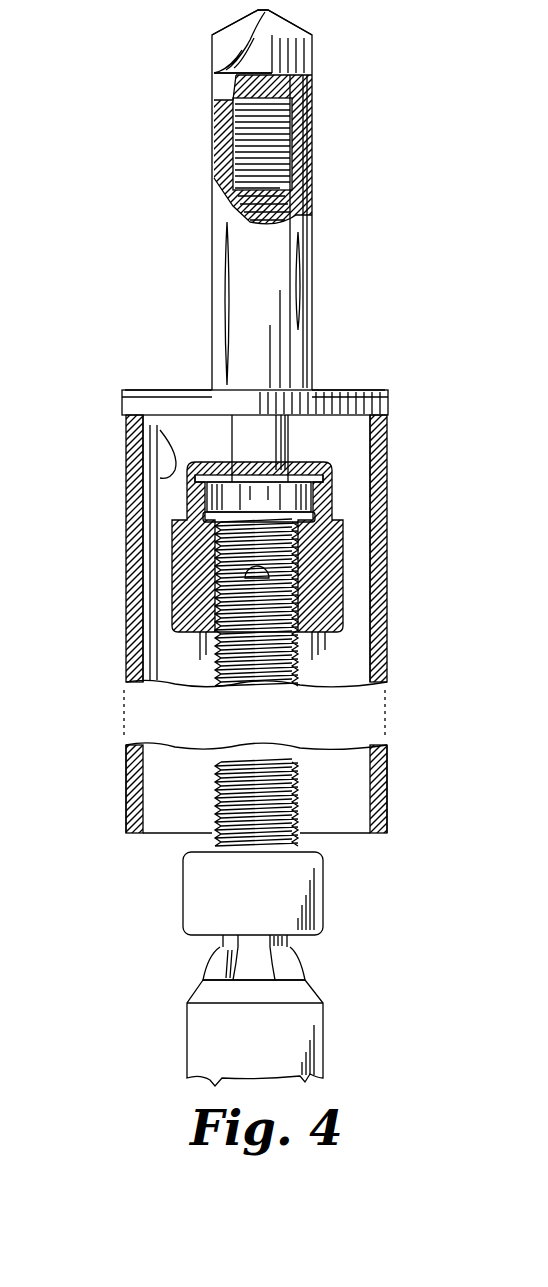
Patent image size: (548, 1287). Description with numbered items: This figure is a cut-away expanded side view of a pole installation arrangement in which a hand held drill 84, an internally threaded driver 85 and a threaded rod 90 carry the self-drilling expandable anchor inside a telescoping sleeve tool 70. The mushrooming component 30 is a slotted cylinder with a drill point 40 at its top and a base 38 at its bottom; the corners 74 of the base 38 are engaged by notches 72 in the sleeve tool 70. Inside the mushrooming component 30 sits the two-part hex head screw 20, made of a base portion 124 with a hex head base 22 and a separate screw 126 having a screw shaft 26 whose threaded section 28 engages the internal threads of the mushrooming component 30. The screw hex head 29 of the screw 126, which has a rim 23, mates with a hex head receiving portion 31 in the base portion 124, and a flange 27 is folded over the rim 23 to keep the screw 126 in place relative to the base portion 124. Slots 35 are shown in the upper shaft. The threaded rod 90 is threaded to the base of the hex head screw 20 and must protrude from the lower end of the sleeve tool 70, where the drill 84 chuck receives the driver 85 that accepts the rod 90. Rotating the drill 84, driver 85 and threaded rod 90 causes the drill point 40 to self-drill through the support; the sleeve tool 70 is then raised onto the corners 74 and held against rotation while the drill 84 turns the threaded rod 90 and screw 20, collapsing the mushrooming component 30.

The hex head screw threaded component 20 is at (38, 656).
The hex head portion 22 is at (345, 548).
The rim 23 is at (285, 440).
The screw shaft 26 is at (288, 460).
The flange 27 is at (333, 466).
The threaded section 28 is at (245, 205).
The screw hex head 29 is at (262, 504).
The mushrooming component 30 is at (104, 105).
The hex head receiving portion 31 is at (203, 520).
The slots 35 is at (266, 303).
The base 38 is at (192, 400).
The drill point 40 is at (212, 56).
The sleeve tool 70 is at (126, 560).
The notches 72 is at (138, 447).
The corners 74 is at (122, 402).
The drill 84 is at (240, 1038).
The internally threaded driver 85 is at (240, 905).
The threaded rod 90 is at (215, 672).
The base portion 124 is at (323, 635).
The screw 126 is at (198, 441).